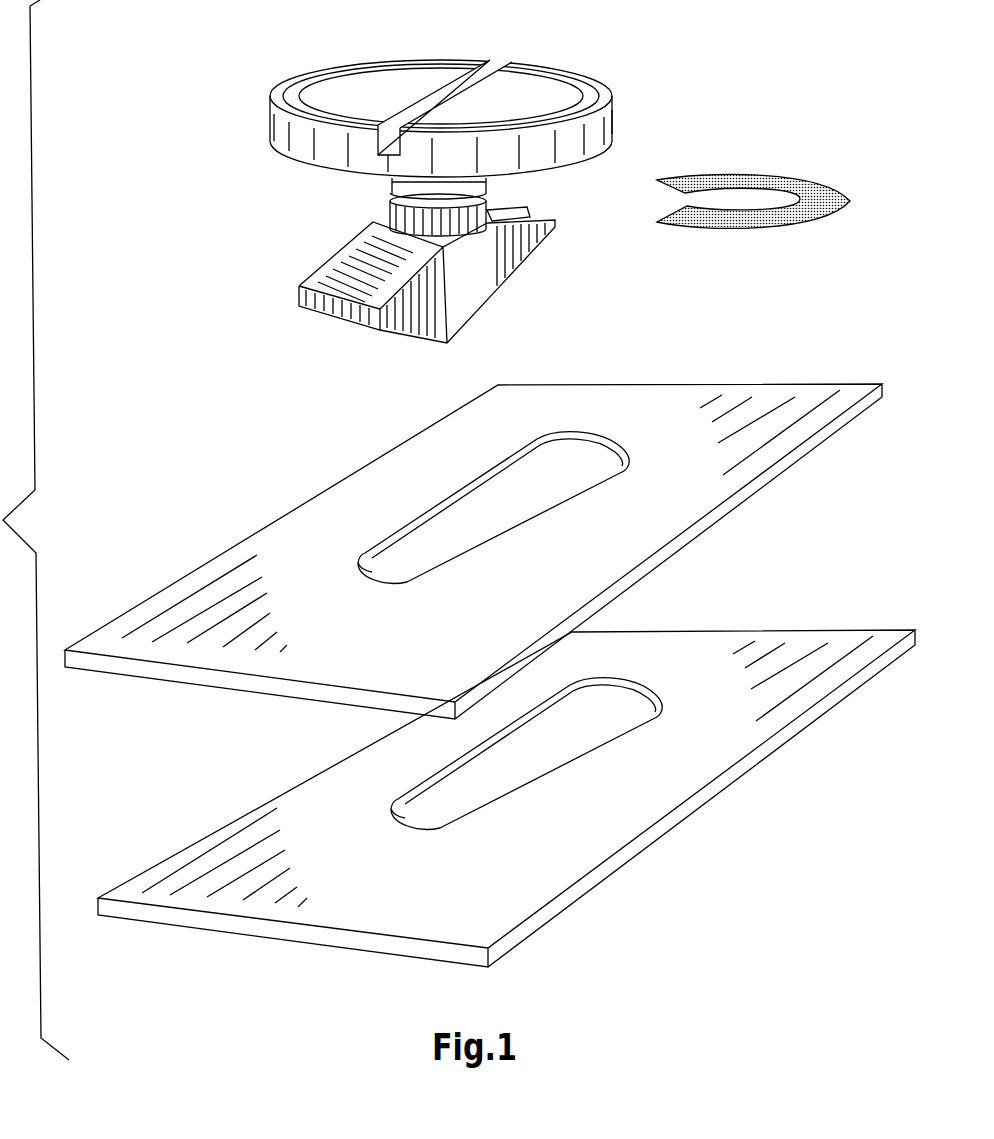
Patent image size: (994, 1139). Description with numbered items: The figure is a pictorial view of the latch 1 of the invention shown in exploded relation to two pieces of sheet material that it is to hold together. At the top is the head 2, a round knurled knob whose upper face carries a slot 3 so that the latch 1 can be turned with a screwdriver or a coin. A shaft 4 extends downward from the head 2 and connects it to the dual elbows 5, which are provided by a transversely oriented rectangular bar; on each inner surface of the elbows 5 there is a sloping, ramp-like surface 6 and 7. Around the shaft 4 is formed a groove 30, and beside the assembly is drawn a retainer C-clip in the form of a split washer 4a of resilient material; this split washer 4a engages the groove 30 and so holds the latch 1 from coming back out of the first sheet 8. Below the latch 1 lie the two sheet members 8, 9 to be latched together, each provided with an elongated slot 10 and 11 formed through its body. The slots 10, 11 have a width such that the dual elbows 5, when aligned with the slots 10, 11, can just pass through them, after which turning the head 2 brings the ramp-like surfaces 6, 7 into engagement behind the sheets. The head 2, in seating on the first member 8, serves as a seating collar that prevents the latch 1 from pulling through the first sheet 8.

The latch 1 is at (265, 125).
The head 2 is at (547, 92).
The slot 3 is at (452, 98).
The groove 30 is at (393, 195).
The shaft 4 is at (410, 218).
The split washer 4a is at (830, 203).
The elbows 5 is at (410, 310).
The ramp-like surface 6 is at (513, 218).
The ramp-like surface 7 is at (362, 272).
The sheet member 8 is at (666, 397).
The sheet member 9 is at (692, 658).
The slot 10 is at (438, 552).
The slot 11 is at (453, 802).